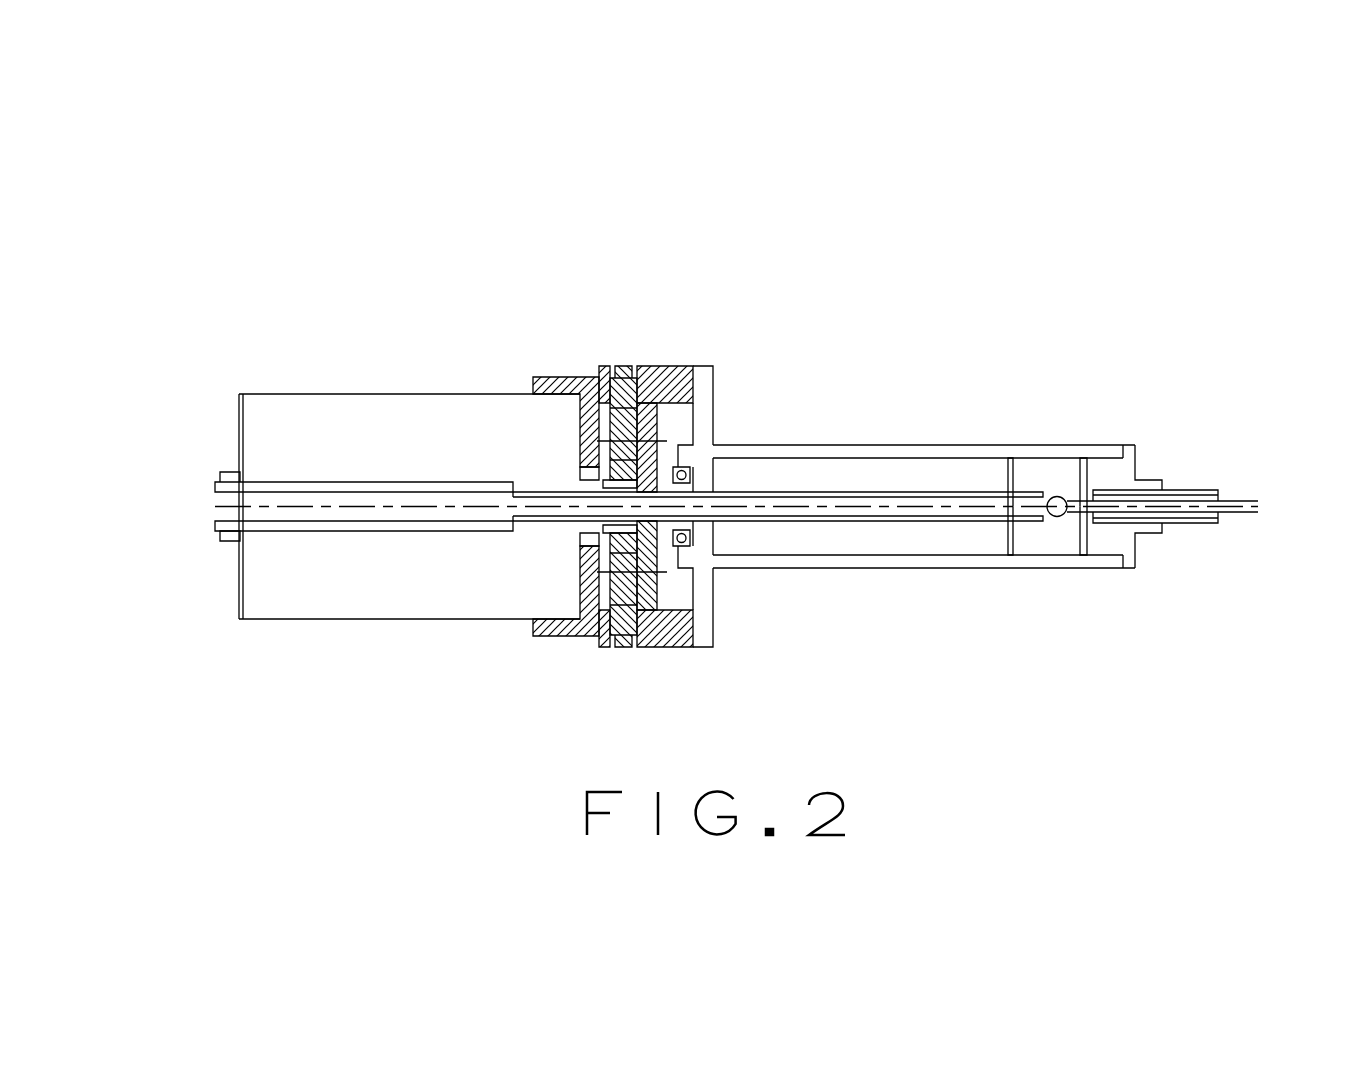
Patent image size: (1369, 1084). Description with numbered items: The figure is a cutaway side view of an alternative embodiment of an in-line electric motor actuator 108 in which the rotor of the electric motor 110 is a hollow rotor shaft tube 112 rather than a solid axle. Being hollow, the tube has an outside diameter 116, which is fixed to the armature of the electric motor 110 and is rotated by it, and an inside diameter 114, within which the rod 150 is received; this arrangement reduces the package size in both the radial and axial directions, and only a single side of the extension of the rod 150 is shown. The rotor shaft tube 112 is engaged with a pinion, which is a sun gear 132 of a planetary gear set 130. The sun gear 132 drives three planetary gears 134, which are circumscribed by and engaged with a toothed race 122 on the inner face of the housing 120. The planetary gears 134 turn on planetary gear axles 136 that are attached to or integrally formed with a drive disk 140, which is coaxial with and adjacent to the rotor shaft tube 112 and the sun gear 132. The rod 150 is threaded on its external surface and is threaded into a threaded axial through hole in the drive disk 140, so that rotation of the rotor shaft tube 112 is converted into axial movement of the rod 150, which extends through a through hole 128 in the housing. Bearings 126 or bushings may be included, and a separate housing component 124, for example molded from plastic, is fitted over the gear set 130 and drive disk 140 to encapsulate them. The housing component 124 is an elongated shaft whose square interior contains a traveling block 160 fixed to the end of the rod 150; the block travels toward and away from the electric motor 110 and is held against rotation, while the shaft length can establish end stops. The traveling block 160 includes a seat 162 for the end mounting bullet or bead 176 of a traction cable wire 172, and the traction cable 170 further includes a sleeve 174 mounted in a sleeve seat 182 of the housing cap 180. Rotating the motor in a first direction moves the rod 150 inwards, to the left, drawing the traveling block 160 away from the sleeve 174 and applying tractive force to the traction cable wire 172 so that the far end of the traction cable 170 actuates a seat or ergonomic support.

The in-line electric motor actuator 108 is at (1063, 236).
The electric motor 110 is at (253, 415).
The rotor shaft tube 112 is at (382, 478).
The inside diameter 114 is at (224, 498).
The outside diameter 116 is at (255, 533).
The housing 120 is at (706, 343).
The toothed race 122 is at (622, 370).
The housing component 124 is at (707, 398).
The bearings 126 is at (690, 470).
The through hole 128 is at (725, 532).
The gear set 130 is at (575, 434).
The sun gear 132 is at (623, 523).
The planetary gears 134 is at (615, 583).
The planetary gear axles 136 is at (643, 557).
The drive disk 140 is at (650, 440).
The rod 150 is at (972, 512).
The traveling block 160 is at (1057, 545).
The seat 162 is at (1078, 515).
The traction cable 170 is at (1188, 550).
The traction cable wire 172 is at (1223, 509).
The sleeve 174 is at (1213, 492).
The end mounting bullet or bead 176 is at (1058, 497).
The housing cap 180 is at (1125, 472).
The sleeve seat 182 is at (1162, 483).